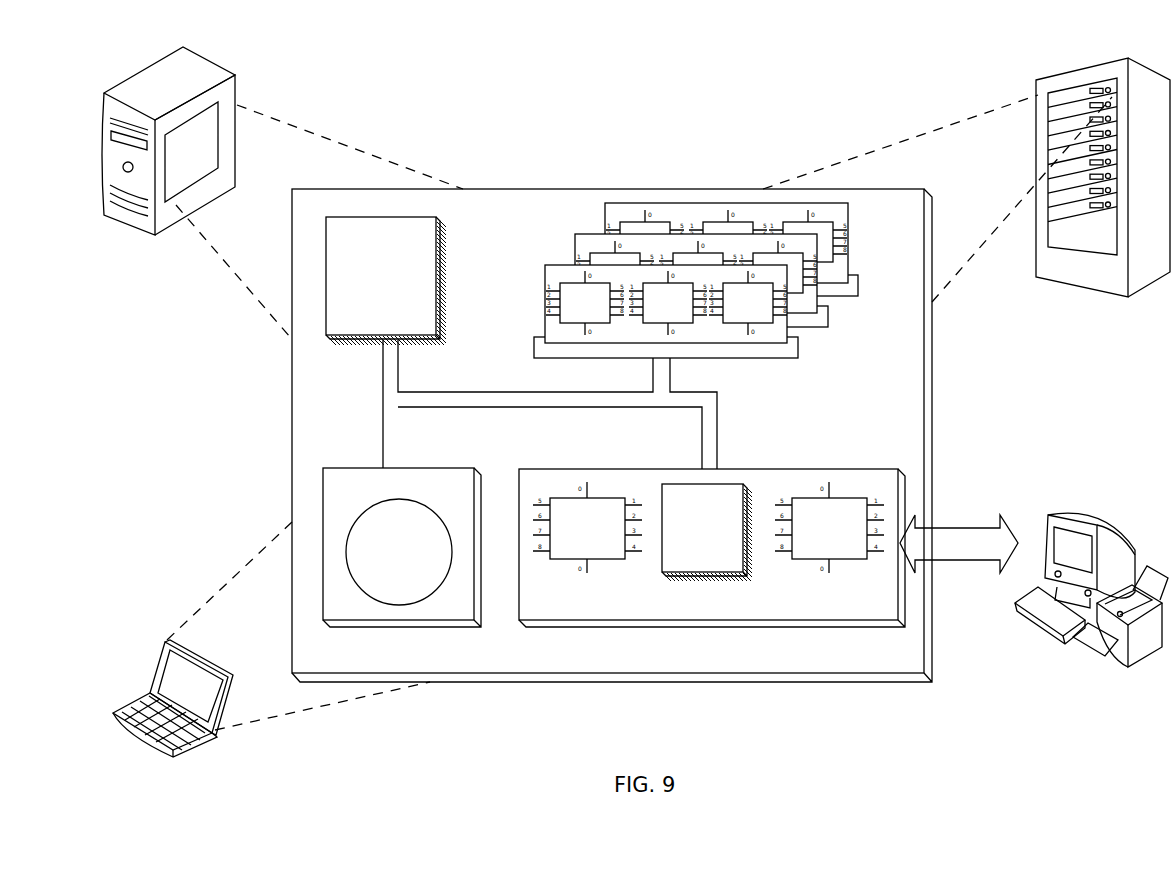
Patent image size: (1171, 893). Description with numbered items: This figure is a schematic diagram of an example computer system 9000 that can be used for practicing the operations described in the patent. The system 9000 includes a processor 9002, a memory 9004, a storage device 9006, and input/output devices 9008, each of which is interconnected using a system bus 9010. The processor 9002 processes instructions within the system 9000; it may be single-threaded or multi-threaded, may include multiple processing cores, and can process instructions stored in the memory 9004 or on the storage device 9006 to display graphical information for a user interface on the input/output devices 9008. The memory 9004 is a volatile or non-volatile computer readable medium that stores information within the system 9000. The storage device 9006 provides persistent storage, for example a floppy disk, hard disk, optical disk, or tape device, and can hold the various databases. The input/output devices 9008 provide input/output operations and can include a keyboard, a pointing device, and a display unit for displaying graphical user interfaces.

The computer system 9000 is at (455, 70).
The processor 9002 is at (386, 281).
The memory 9004 is at (853, 326).
The storage device 9006 is at (402, 547).
The input/output devices 9008 is at (1046, 522).
The system bus 9010 is at (549, 408).